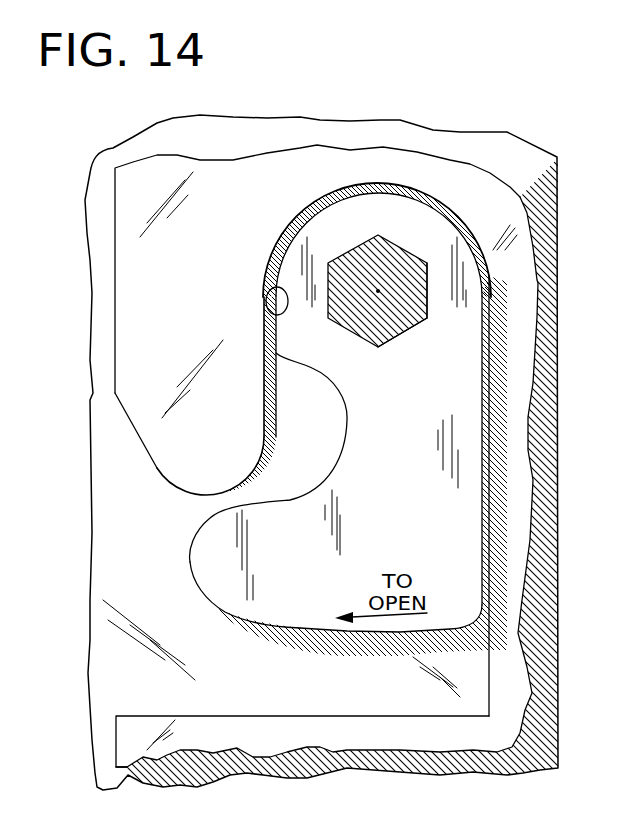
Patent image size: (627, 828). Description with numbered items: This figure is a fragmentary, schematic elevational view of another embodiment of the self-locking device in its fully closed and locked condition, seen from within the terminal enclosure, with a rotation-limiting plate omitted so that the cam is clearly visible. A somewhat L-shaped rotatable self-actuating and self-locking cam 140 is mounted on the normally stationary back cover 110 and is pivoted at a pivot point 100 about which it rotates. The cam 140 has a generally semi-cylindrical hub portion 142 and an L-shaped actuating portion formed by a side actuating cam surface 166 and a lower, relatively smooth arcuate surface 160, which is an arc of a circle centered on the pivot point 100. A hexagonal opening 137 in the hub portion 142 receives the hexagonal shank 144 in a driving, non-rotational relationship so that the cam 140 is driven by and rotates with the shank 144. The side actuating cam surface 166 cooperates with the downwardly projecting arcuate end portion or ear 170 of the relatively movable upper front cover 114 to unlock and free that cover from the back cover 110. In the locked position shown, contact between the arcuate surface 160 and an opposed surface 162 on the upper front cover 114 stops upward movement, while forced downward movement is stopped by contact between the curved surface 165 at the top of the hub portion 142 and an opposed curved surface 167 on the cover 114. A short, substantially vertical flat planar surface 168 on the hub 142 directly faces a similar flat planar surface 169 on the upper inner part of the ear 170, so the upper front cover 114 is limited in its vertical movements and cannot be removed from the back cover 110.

The back cover 110 is at (465, 140).
The upper front cover 114 is at (113, 218).
The pivot point 100 is at (378, 292).
The hexagonal opening 137 is at (400, 337).
The rotatable self-actuating and self-locking cam 140 is at (192, 548).
The hub portion 142 is at (448, 233).
The hexagonal shank 144 is at (418, 312).
The arcuate surface 160 is at (287, 623).
The opposed surface 162 is at (232, 716).
The curved surface 165 is at (360, 192).
The side actuating cam surface 166 is at (293, 500).
The opposed curved surface 167 is at (331, 184).
The flat planar surface 168 is at (268, 288).
The flat planar surface 169 is at (266, 303).
The end portion or ear 170 is at (203, 494).